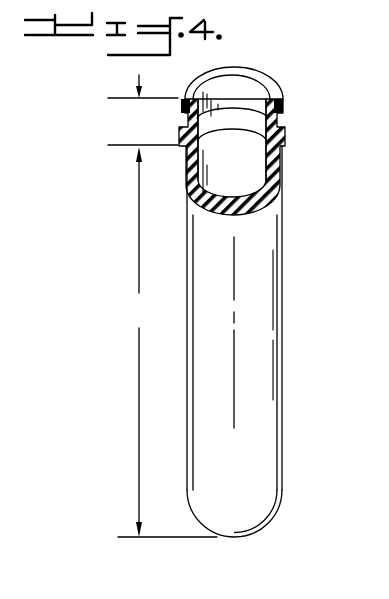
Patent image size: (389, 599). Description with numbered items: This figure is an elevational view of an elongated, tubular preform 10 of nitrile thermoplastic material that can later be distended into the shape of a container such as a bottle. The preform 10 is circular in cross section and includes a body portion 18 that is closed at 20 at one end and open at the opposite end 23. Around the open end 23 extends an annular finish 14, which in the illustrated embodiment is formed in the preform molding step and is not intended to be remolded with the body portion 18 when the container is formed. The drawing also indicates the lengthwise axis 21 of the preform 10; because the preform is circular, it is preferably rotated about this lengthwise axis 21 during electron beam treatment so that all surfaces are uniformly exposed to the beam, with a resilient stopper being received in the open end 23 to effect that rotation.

The preform 10 is at (288, 297).
The annular finish 14 is at (143, 110).
The body portion 18 is at (167, 342).
The closed end 20 is at (232, 537).
The lengthwise axis 21 is at (234, 373).
The open end 23 is at (240, 90).